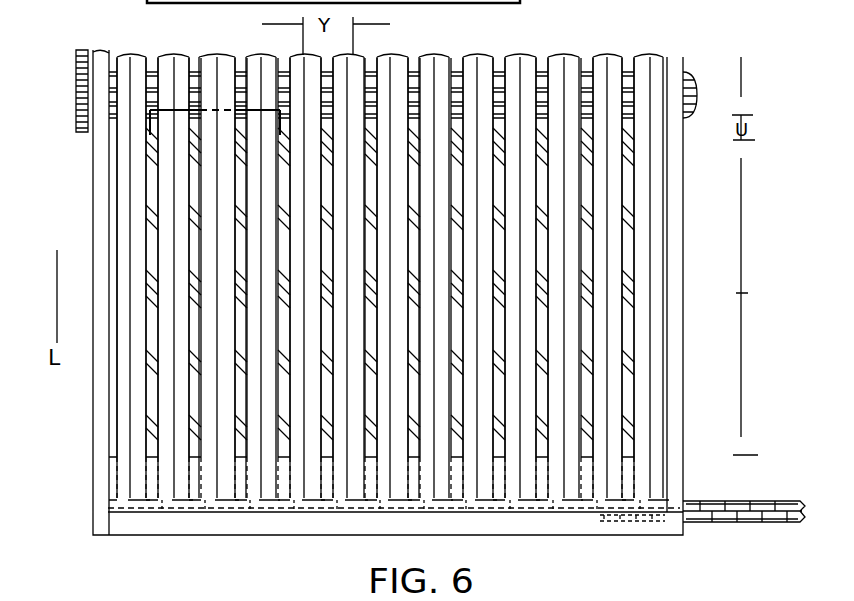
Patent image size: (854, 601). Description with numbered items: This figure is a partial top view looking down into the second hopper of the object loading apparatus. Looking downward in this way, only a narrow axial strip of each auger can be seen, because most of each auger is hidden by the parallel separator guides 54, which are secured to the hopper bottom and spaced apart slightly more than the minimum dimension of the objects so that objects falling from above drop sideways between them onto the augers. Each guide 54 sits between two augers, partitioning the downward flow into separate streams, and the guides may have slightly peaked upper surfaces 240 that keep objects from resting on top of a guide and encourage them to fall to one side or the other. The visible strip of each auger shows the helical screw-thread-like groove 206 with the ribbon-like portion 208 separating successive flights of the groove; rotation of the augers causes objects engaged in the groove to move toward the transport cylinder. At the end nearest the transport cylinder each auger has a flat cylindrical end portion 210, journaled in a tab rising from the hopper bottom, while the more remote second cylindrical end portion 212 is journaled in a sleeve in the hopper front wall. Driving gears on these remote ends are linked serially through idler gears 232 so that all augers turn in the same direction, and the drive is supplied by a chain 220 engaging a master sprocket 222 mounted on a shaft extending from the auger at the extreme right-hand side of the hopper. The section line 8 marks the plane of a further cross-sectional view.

The section line 8- 8 is at (162, 108).
The separator guides 54 is at (610, 60).
The helical screw-thread-like groove 206 is at (148, 410).
The ribbon-like portion 208 is at (150, 190).
The cylindrical end portion 210 is at (193, 58).
The second cylindrical end portion 212 is at (190, 483).
The chain 220 is at (745, 522).
The master sprocket 222 is at (658, 516).
The idler gears 232 is at (300, 505).
The upper surfaces 240 is at (657, 481).